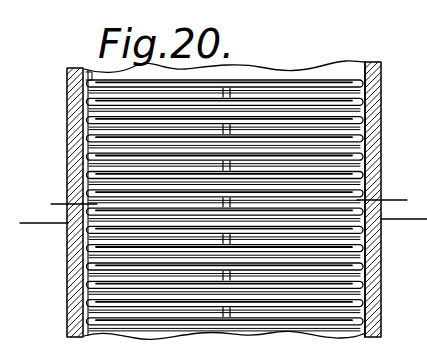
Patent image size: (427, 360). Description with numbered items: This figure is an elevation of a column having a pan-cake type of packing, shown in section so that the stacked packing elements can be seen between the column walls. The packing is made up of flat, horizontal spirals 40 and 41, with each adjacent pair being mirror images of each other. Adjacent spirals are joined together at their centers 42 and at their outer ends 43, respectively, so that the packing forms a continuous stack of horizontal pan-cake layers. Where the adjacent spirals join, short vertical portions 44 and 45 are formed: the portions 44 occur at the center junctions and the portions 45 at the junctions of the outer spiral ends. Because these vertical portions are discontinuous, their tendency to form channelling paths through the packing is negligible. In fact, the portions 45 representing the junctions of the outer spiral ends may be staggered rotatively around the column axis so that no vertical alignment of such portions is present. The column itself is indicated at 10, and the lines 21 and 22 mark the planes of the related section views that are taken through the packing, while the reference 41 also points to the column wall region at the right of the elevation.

The heat exchanger casing 10 is at (382, 63).
The section line 21 is at (26, 215).
The section line 22 is at (54, 195).
The flat horizontal spiral 40 is at (327, 87).
The flat horizontal spiral 41 is at (381, 83).
The center 42 is at (225, 92).
The outer end 43 is at (83, 104).
The short vertical portion 44 is at (361, 99).
The short vertical portion 45 is at (85, 112).